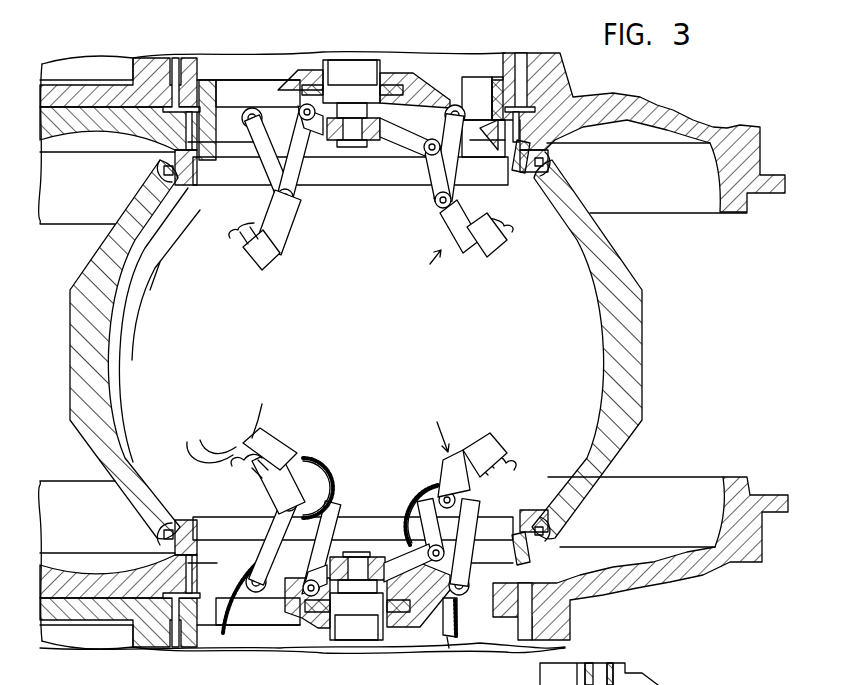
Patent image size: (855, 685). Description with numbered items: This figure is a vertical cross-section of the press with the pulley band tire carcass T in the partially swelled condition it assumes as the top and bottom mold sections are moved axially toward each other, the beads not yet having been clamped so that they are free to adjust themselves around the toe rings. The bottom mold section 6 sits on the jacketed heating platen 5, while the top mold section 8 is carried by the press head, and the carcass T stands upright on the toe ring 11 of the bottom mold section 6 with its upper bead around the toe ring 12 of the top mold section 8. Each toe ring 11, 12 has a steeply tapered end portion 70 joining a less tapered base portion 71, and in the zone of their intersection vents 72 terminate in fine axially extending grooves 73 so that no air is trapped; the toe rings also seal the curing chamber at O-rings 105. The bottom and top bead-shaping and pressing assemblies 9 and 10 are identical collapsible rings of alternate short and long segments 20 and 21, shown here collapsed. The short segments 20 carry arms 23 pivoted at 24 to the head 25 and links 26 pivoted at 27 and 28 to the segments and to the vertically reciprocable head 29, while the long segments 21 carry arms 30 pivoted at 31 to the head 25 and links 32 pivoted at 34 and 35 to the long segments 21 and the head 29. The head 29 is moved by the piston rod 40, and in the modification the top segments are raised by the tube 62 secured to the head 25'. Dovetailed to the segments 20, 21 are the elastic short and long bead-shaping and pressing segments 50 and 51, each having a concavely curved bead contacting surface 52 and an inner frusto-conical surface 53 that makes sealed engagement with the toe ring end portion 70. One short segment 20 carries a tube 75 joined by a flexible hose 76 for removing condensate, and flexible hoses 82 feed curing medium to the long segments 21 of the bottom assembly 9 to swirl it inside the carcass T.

The pulley band tire carcass T is at (637, 320).
The heating platen 5 is at (87, 650).
The bottom mold section 6 is at (767, 495).
The top mold section 8 is at (770, 193).
The bottom bead-shaping and pressing assembly 9 is at (436, 427).
The top bead-shaping and pressing assembly 10 is at (424, 265).
The toe ring of the bottom mold section 11 is at (503, 515).
The toe ring of the top mold section 12 is at (384, 180).
The short arcuate segments 20 is at (268, 255).
The long arcuate segments 21 is at (473, 257).
The arms 23 is at (264, 198).
The pivotal connection 24 is at (251, 110).
The head 25 is at (355, 369).
The head 25' is at (612, 663).
The links 26 is at (300, 164).
The pivotal connection 27 is at (293, 199).
The pivotal connection 28 is at (299, 112).
The vertically reciprocable head 29 is at (382, 142).
The arms 30 is at (464, 168).
The pivotal connection 31 is at (458, 107).
The links 32 is at (427, 187).
The pivotal connection 34 is at (435, 222).
The pivotal connection 35 is at (426, 153).
The piston rod 40 is at (353, 135).
The short arcuate bead-shaping and pressing segments 50 is at (245, 255).
The long arcuate bead-shaping and pressing segments 51 is at (503, 242).
The concavely curved bead contacting surface 52 is at (228, 240).
The inner frusto-conical surface 53 is at (244, 234).
The tube 62 is at (368, 53).
The end portion of relatively steep taper 70 is at (184, 186).
The base portion of less taper 71 is at (164, 172).
The vents 72 is at (525, 176).
The fine axially extending grooves 73 is at (545, 164).
The tube 75 is at (252, 438).
The flexible hose 76 is at (320, 475).
The flexible hoses 82 is at (453, 637).
The O-rings 105 is at (494, 125).